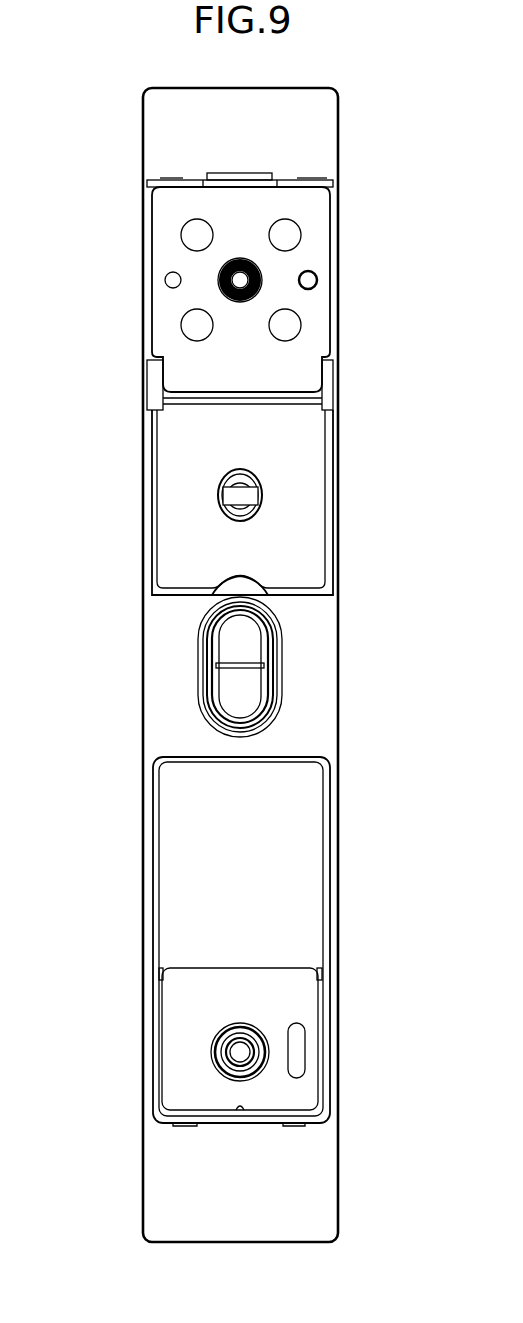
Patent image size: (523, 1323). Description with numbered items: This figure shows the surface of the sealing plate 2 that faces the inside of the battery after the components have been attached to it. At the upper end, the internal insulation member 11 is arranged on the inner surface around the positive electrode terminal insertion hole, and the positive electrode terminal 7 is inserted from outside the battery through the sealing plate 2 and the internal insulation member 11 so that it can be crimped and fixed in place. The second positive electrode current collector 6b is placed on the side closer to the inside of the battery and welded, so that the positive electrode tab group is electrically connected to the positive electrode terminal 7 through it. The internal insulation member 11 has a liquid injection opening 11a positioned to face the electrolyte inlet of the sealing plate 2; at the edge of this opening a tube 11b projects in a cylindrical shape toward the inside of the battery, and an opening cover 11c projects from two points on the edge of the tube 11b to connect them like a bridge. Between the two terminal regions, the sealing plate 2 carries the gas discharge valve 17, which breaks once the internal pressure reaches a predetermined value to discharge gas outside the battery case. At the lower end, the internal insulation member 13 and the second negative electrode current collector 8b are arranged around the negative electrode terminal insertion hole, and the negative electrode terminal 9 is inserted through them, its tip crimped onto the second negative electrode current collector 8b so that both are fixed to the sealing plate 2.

The sealing plate 2 is at (318, 690).
The second positive electrode current collector 6b is at (167, 335).
The positive electrode terminal 7 is at (263, 275).
The internal insulation member 11 is at (312, 432).
The liquid injection opening 11a is at (235, 512).
The tube 11b is at (226, 475).
The opening cover 11c is at (258, 497).
The gas discharge valve 17 is at (250, 642).
The internal insulation member 13 is at (300, 848).
The second negative electrode current collector 8b is at (180, 1073).
The negative electrode terminal 9 is at (213, 1042).